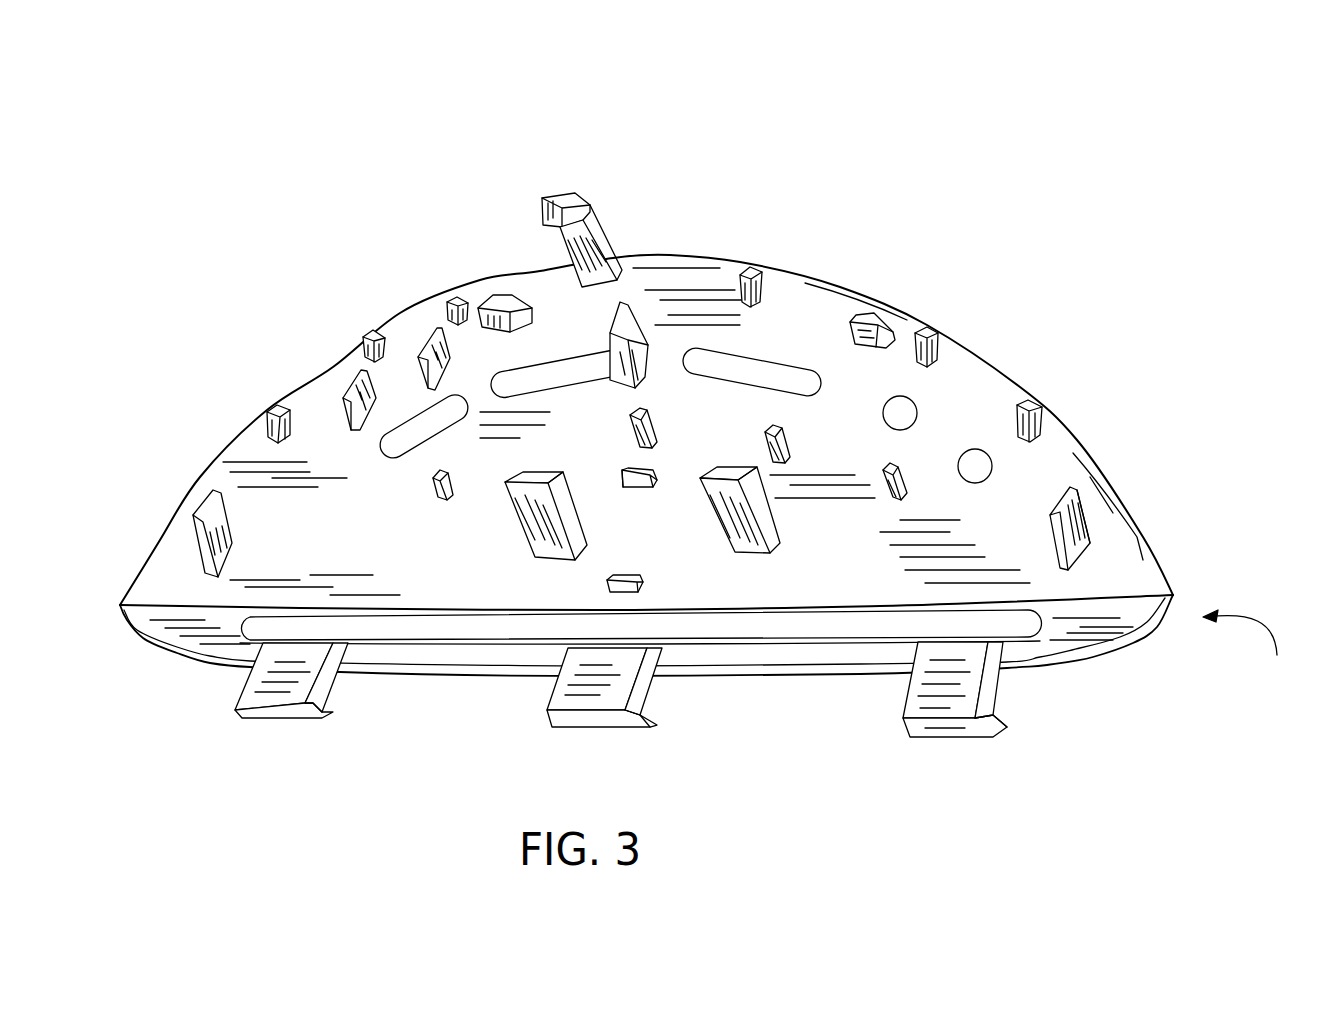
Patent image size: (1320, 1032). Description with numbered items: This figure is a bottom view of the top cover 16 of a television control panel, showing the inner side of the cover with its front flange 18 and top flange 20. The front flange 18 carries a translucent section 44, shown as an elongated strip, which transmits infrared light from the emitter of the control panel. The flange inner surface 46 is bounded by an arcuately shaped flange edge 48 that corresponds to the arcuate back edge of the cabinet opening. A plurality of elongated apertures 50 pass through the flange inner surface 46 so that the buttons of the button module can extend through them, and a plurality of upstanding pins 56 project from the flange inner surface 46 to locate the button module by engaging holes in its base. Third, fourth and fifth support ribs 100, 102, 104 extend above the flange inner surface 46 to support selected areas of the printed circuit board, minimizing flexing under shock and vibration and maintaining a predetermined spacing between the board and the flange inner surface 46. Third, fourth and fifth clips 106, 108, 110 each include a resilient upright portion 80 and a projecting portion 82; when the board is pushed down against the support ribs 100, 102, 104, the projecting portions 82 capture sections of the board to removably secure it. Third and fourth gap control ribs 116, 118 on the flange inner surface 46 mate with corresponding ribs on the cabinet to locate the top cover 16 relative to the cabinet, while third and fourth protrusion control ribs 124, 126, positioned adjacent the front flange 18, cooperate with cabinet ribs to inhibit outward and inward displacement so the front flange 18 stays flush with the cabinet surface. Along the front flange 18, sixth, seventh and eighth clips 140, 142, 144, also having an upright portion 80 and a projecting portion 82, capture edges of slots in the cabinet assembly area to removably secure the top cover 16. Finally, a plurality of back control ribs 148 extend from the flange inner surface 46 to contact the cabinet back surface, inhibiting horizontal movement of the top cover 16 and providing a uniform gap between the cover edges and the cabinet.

The top cover 16 is at (1253, 648).
The front flange 18 is at (1143, 632).
The top flange 20 is at (1160, 578).
The translucent section 44 is at (757, 630).
The flange inner surface 46 is at (1083, 503).
The flange edge 48 is at (1075, 440).
The elongated apertures 50 is at (568, 365).
The upstanding pins 56 is at (432, 488).
The resilient upright portion 80 is at (333, 677).
The projecting portion 82 is at (330, 720).
The third support rib 100 is at (357, 372).
The fourth support rib 102 is at (430, 332).
The fifth support rib 104 is at (640, 312).
The third clip 106 is at (517, 517).
The fourth clip 108 is at (722, 525).
The fifth clip 110 is at (597, 222).
The third gap control rib 116 is at (883, 322).
The fourth gap control rib 118 is at (485, 295).
The third protrusion control rib 124 is at (1080, 510).
The fourth protrusion control rib 126 is at (200, 507).
The sixth clip 140 is at (900, 693).
The seventh clip 142 is at (557, 693).
The eighth clip 144 is at (248, 680).
The back control ribs 148 is at (455, 298).